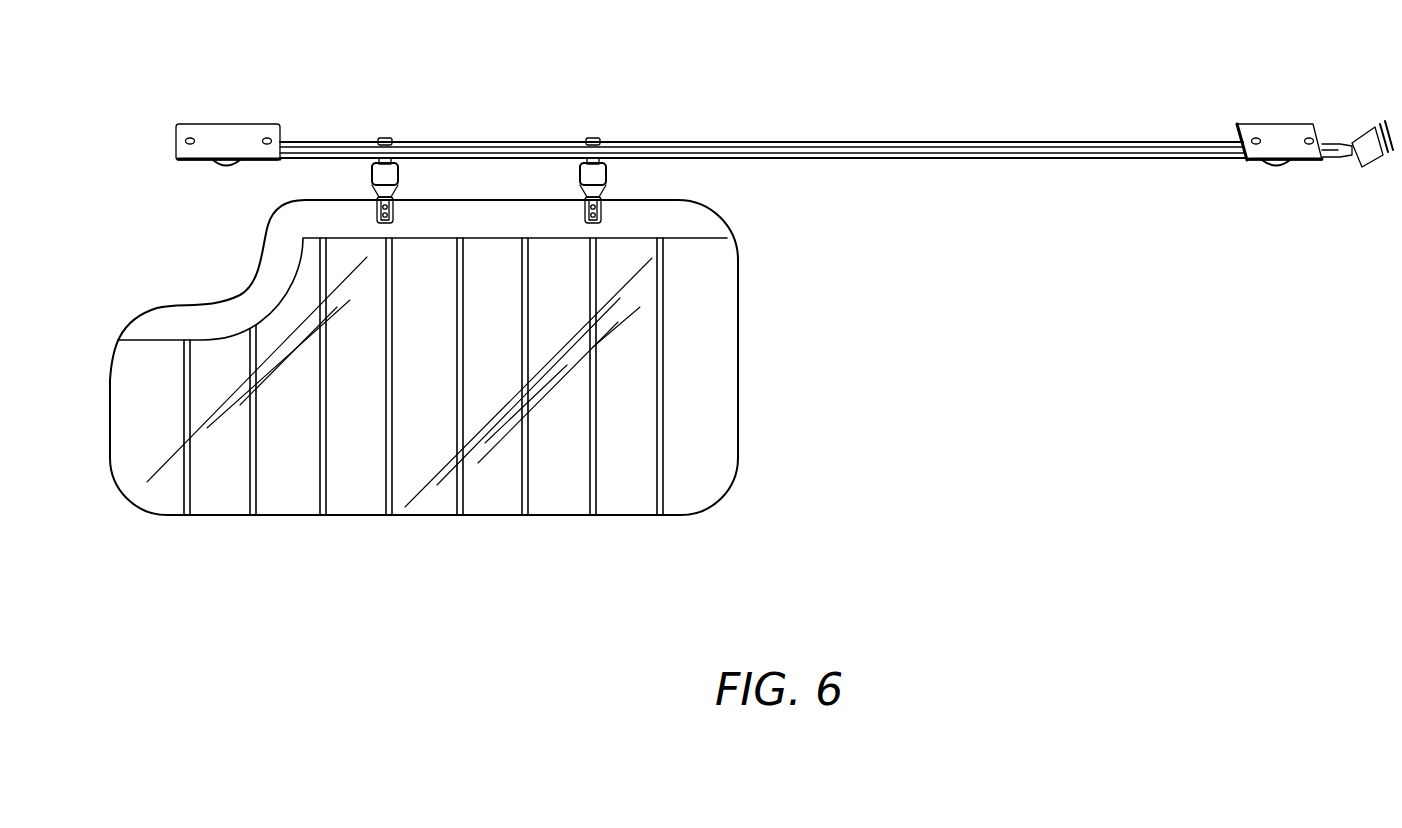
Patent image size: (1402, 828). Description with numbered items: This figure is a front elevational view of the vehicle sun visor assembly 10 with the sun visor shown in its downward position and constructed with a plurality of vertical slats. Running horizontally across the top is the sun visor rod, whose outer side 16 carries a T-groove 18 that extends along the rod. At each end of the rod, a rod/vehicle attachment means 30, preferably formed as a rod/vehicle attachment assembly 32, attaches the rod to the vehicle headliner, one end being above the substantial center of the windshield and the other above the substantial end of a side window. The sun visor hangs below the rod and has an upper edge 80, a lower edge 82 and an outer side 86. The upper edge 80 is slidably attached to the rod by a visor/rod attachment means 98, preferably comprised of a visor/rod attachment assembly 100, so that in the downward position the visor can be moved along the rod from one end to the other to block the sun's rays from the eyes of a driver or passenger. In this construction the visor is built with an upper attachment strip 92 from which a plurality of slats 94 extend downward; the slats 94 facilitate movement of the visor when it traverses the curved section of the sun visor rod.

The vehicle sun visor assembly 10 is at (968, 331).
The outer side 16 is at (763, 181).
The T-groove 18 is at (1018, 153).
The rod/vehicle attachment means 30 is at (784, 121).
The rod/vehicle attachment assembly 32 is at (215, 137).
The upper edge 80 is at (440, 203).
The lower edge 82 is at (493, 515).
The outer side 86 is at (738, 301).
The upper attachment strip 92 is at (700, 222).
The slats 94 is at (630, 404).
The visor/rod attachment means 98 is at (512, 149).
The visor/rod attachment assembly 100 is at (383, 138).